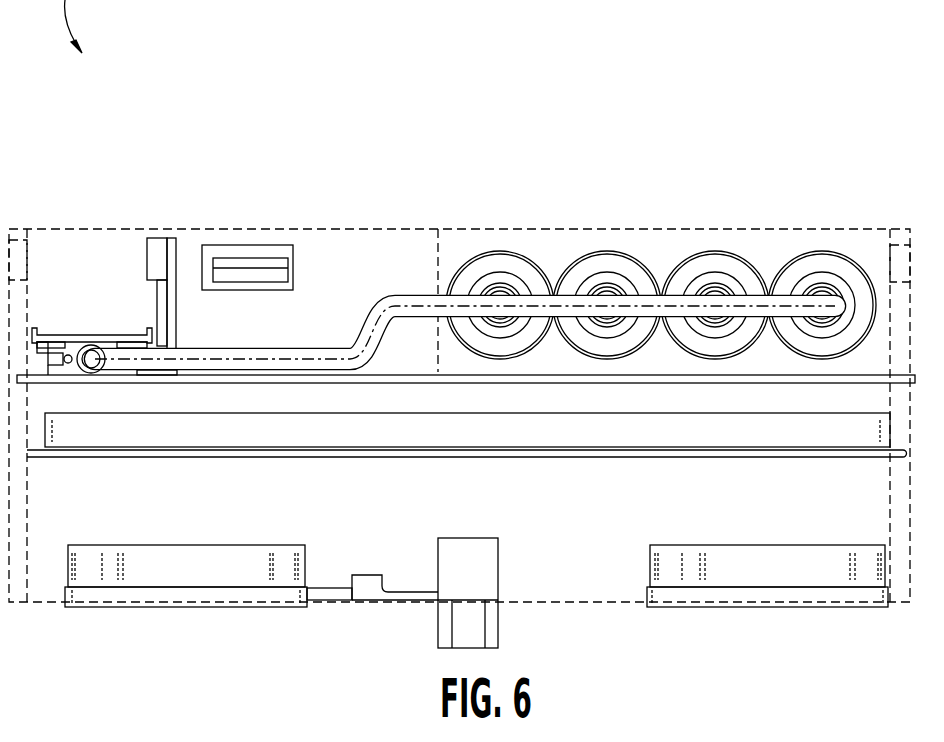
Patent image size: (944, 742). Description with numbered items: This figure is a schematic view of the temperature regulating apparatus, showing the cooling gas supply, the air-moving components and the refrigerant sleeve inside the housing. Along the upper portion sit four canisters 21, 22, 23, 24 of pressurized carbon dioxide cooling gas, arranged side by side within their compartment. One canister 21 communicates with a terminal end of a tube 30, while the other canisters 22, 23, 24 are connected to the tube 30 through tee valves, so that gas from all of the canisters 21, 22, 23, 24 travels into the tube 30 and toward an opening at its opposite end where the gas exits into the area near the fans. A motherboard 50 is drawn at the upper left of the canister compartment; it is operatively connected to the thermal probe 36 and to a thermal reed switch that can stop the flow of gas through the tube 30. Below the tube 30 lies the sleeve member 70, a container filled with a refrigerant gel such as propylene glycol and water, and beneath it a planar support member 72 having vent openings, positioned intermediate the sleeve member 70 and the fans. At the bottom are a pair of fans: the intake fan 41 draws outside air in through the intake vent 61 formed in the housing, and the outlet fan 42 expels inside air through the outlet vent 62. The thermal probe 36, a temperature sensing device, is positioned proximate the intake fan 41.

The canister 21 is at (837, 263).
The canister 22 is at (723, 263).
The canister 23 is at (612, 263).
The canister 24 is at (497, 263).
The tube 30 is at (405, 302).
The thermal probe 36 is at (445, 625).
The intake fan 41 is at (177, 570).
The outlet fan 42 is at (810, 570).
The motherboard 50 is at (163, 303).
The intake vent 61 is at (93, 597).
The outlet vent 62 is at (724, 597).
The sleeve member 70 is at (83, 432).
The planar support member 72 is at (843, 458).